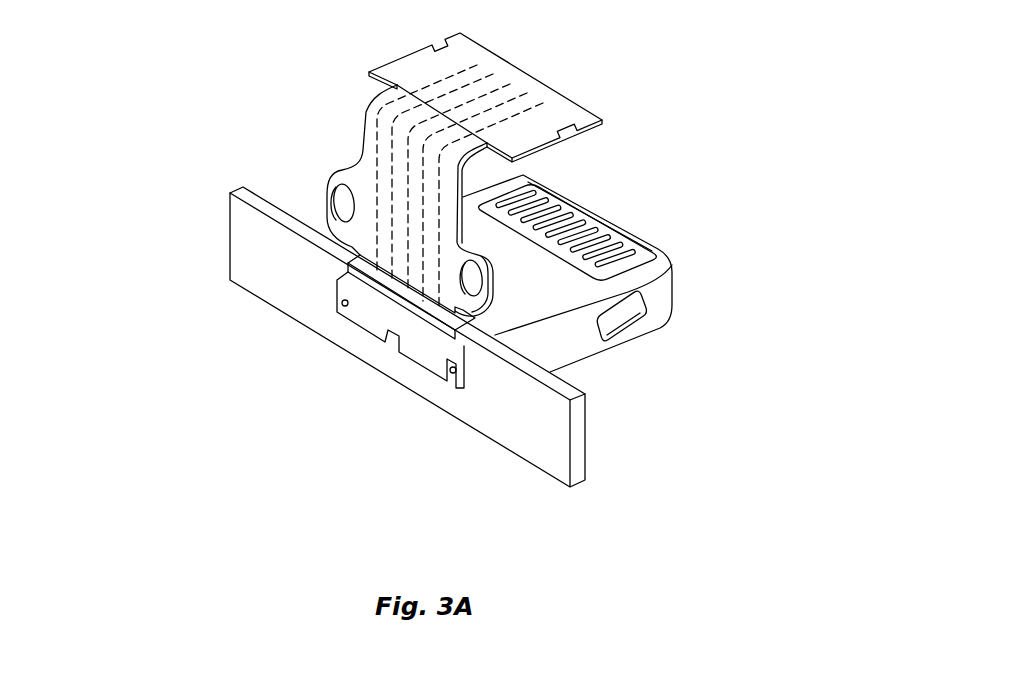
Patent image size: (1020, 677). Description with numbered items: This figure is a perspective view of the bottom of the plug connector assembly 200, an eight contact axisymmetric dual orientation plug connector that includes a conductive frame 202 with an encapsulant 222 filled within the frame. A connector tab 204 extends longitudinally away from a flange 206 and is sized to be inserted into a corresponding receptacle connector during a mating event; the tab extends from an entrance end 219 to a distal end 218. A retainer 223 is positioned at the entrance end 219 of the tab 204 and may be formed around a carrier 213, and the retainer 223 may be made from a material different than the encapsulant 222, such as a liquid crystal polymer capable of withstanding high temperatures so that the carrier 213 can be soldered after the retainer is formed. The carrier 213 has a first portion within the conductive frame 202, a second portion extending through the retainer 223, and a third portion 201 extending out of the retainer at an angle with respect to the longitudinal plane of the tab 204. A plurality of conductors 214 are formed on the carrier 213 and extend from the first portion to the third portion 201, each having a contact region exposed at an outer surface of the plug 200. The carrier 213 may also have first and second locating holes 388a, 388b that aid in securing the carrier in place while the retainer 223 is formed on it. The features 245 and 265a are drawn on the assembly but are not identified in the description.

The plug connector assembly 200 is at (208, 48).
The third portion of carrier 201 is at (344, 140).
The conductive frame 202 is at (665, 288).
The connector tab 204 is at (712, 420).
The flange 206 is at (258, 237).
The carrier 213 is at (518, 78).
The conductors 214 is at (477, 65).
The distal end 218 is at (603, 213).
The entrance end 219 is at (375, 425).
The encapsulant 222 is at (372, 322).
The retainer 223 is at (375, 292).
The front face of housing 245 is at (570, 338).
The opening 265a is at (617, 320).
The first locating hole 388a is at (347, 200).
The second locating hole 388b is at (472, 283).